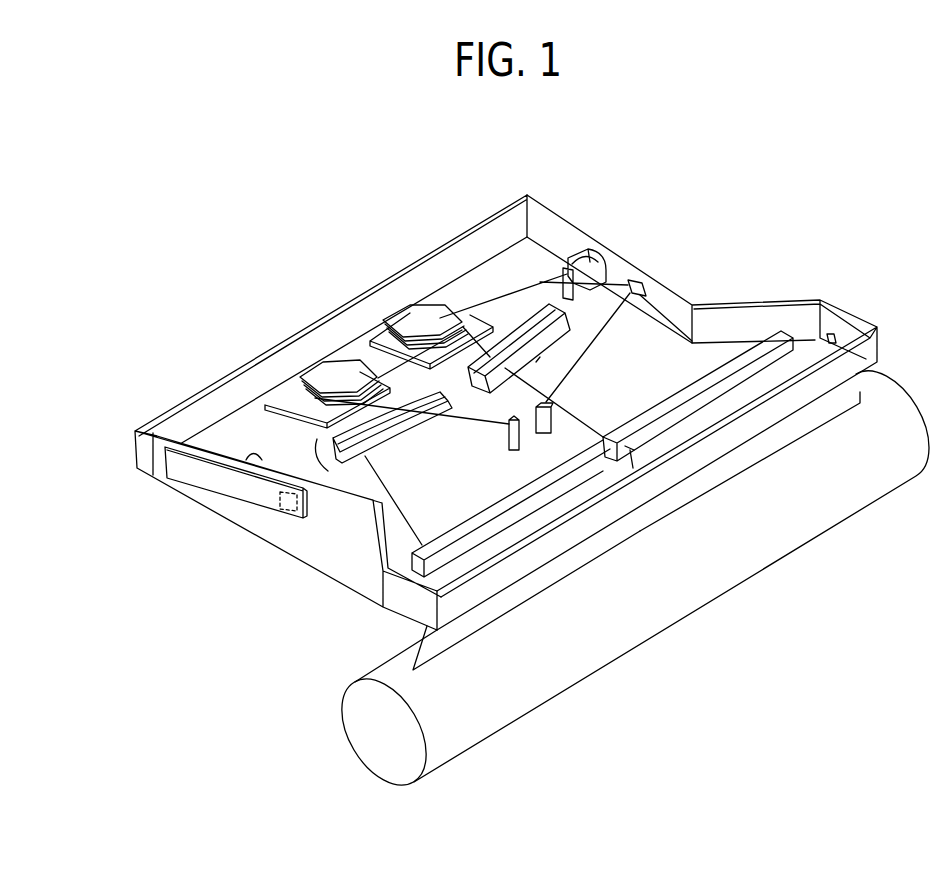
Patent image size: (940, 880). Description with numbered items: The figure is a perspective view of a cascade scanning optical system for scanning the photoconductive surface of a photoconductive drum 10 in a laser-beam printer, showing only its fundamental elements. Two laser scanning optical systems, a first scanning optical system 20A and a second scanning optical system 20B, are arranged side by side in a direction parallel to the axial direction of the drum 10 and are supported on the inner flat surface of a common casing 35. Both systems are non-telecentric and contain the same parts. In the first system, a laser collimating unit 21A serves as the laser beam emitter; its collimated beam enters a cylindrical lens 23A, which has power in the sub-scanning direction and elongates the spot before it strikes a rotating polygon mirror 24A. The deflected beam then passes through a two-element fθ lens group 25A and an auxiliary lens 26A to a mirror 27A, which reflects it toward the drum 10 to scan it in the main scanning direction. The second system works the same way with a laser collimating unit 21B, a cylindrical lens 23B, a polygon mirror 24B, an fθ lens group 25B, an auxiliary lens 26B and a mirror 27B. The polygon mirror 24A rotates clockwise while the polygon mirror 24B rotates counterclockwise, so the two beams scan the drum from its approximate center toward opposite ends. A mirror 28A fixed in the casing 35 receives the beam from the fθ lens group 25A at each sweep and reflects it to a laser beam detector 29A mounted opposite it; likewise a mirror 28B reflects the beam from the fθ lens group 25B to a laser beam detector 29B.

The photoconductive drum 10 is at (880, 397).
The first scanning optical system 20A is at (279, 372).
The second scanning optical system 20B is at (463, 260).
The laser collimating unit 21A is at (253, 457).
The laser collimating unit 21B is at (585, 256).
The cylindrical lens 23A is at (260, 457).
The cylindrical lens 23B is at (580, 300).
The polygon mirror 24A is at (335, 373).
The polygon mirror 24B is at (415, 315).
The fθ lens group 25A is at (289, 478).
The fθ lens group 25B is at (515, 420).
The auxiliary lens 26A is at (457, 533).
The auxiliary lens 26B is at (683, 397).
The mirror 27A is at (538, 512).
The mirror 27B is at (722, 412).
The mirror 28A is at (509, 432).
The mirror 28B is at (552, 422).
The laser beam detector 29A is at (291, 512).
The laser beam detector 29B is at (647, 292).
The casing 35 is at (548, 228).